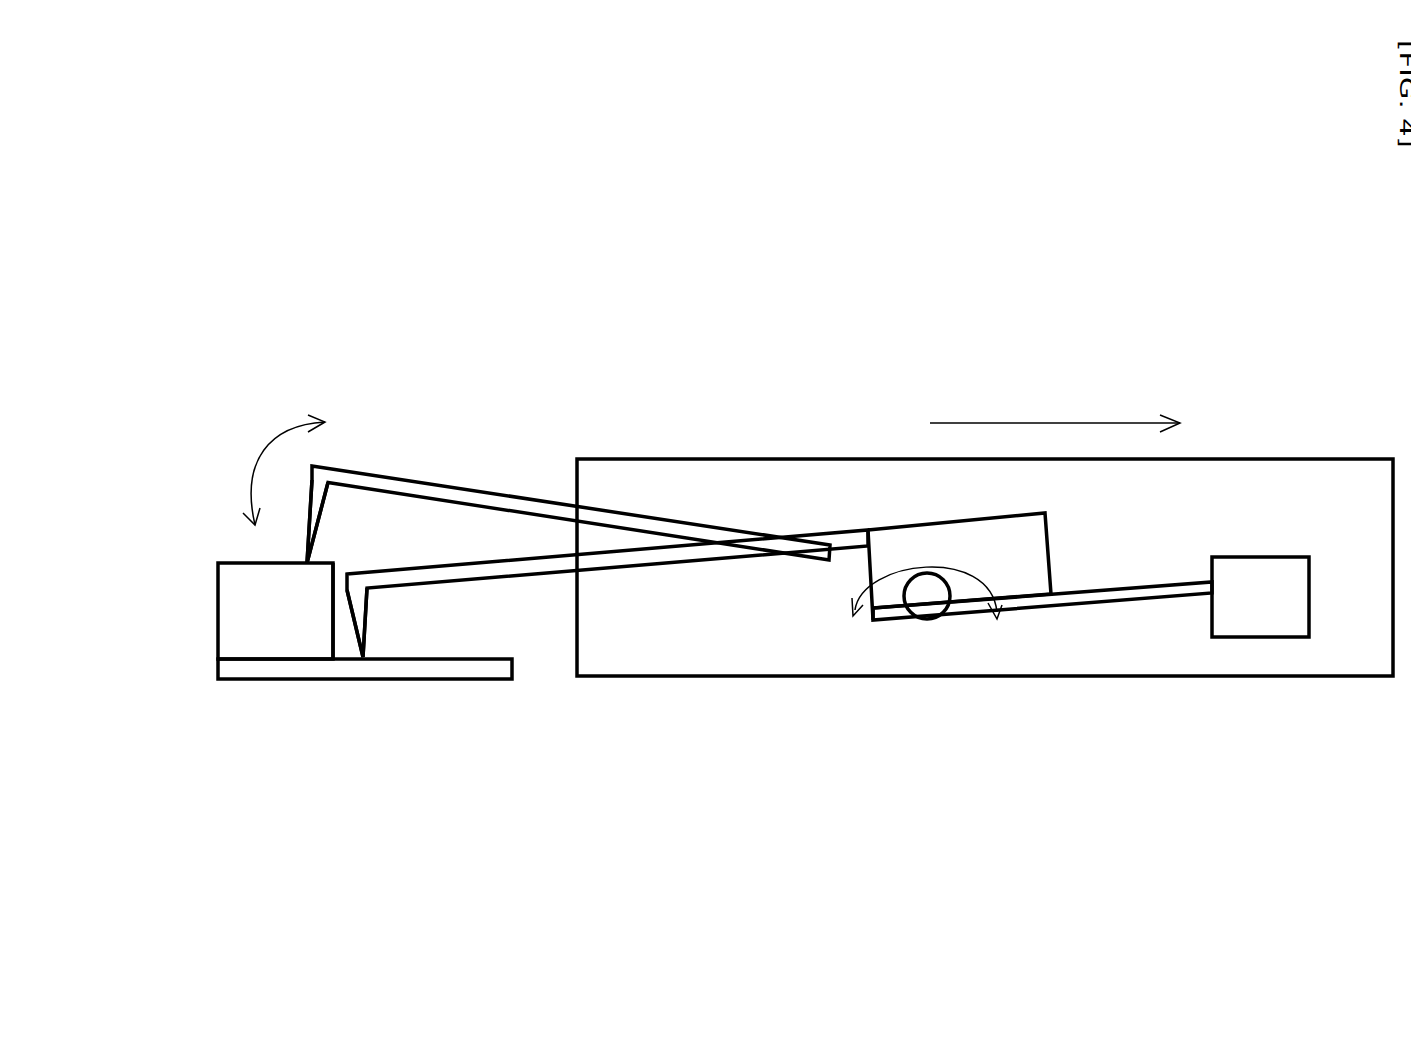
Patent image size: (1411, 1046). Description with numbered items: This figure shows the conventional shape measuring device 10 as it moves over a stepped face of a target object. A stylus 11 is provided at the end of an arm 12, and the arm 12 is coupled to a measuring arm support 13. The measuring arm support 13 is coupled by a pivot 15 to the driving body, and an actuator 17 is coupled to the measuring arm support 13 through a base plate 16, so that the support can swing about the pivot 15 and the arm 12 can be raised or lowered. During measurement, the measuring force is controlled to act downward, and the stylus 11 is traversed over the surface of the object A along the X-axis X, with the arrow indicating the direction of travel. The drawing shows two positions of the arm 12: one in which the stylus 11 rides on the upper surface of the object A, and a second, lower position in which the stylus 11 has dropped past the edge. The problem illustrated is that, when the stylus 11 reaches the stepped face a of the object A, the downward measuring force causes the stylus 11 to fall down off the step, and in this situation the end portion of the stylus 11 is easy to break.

The shape measuring device 10 is at (1252, 356).
The stylus 11 is at (315, 505).
The arm 12 is at (454, 491).
The measuring arm support 13 is at (898, 526).
The pivot 15 is at (933, 600).
The base plate 16 is at (1119, 596).
The actuator 17 is at (1261, 615).
The object A is at (239, 612).
The stepped face a is at (333, 610).
The X-axis X is at (1077, 423).